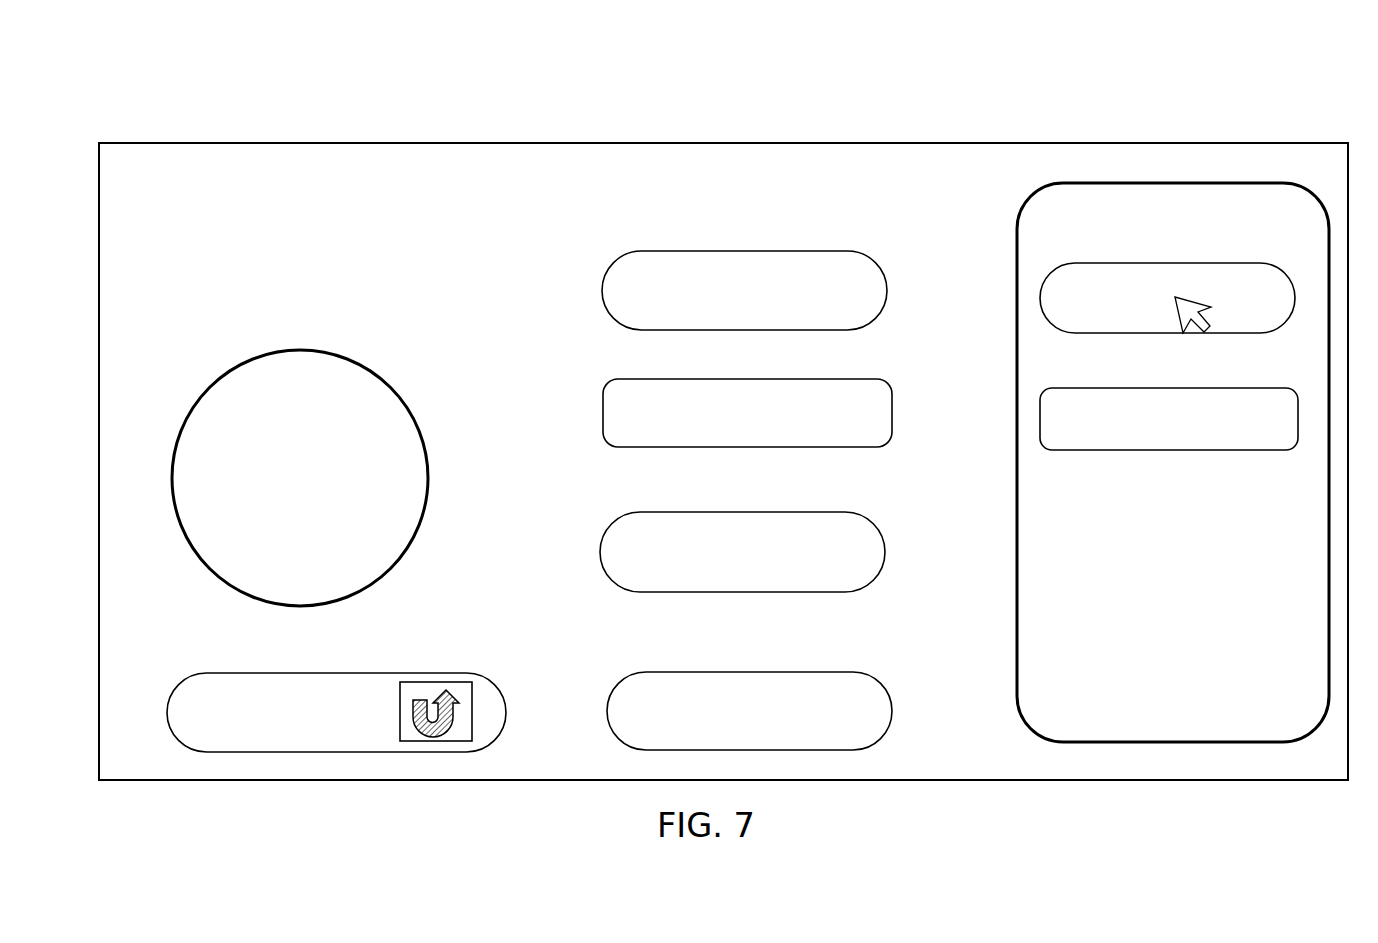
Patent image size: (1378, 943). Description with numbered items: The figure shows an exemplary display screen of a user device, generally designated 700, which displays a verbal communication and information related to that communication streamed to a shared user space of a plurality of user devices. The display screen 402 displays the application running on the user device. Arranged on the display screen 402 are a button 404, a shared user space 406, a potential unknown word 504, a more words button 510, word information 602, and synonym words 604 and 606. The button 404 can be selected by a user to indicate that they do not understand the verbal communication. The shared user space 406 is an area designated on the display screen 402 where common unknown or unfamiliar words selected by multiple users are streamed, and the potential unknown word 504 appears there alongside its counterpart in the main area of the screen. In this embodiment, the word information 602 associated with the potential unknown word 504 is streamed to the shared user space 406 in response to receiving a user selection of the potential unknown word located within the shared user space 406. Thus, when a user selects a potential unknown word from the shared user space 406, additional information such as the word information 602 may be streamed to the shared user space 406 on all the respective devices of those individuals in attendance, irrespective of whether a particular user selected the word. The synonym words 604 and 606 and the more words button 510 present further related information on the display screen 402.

The display screen of a user device 700 is at (1252, 62).
The display screen 402 is at (1025, 143).
The button 404 is at (300, 350).
The shared user space 406 is at (1017, 588).
The potential unknown word 504 is at (740, 270).
The more words button 510 is at (322, 692).
The word information 602 is at (667, 379).
The synonym word 604 is at (727, 540).
The synonym word 606 is at (742, 697).